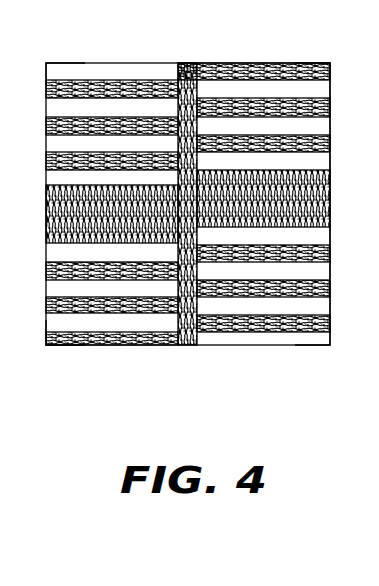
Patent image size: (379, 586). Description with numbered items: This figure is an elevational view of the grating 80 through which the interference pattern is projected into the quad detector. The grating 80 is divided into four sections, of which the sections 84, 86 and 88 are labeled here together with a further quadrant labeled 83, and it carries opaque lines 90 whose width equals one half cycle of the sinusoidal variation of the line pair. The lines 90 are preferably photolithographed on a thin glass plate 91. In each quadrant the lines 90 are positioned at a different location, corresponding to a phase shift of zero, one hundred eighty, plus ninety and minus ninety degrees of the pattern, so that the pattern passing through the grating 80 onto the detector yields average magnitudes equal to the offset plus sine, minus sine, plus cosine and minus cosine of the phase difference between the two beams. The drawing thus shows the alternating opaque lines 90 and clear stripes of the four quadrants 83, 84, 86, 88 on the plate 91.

The grating 80 is at (277, 63).
The upper left corner 83 is at (67, 63).
The section 84 is at (329, 63).
The section 86 is at (46, 345).
The section 88 is at (330, 345).
The opaque lines 90 is at (54, 150).
The thin glass plate 91 is at (331, 122).